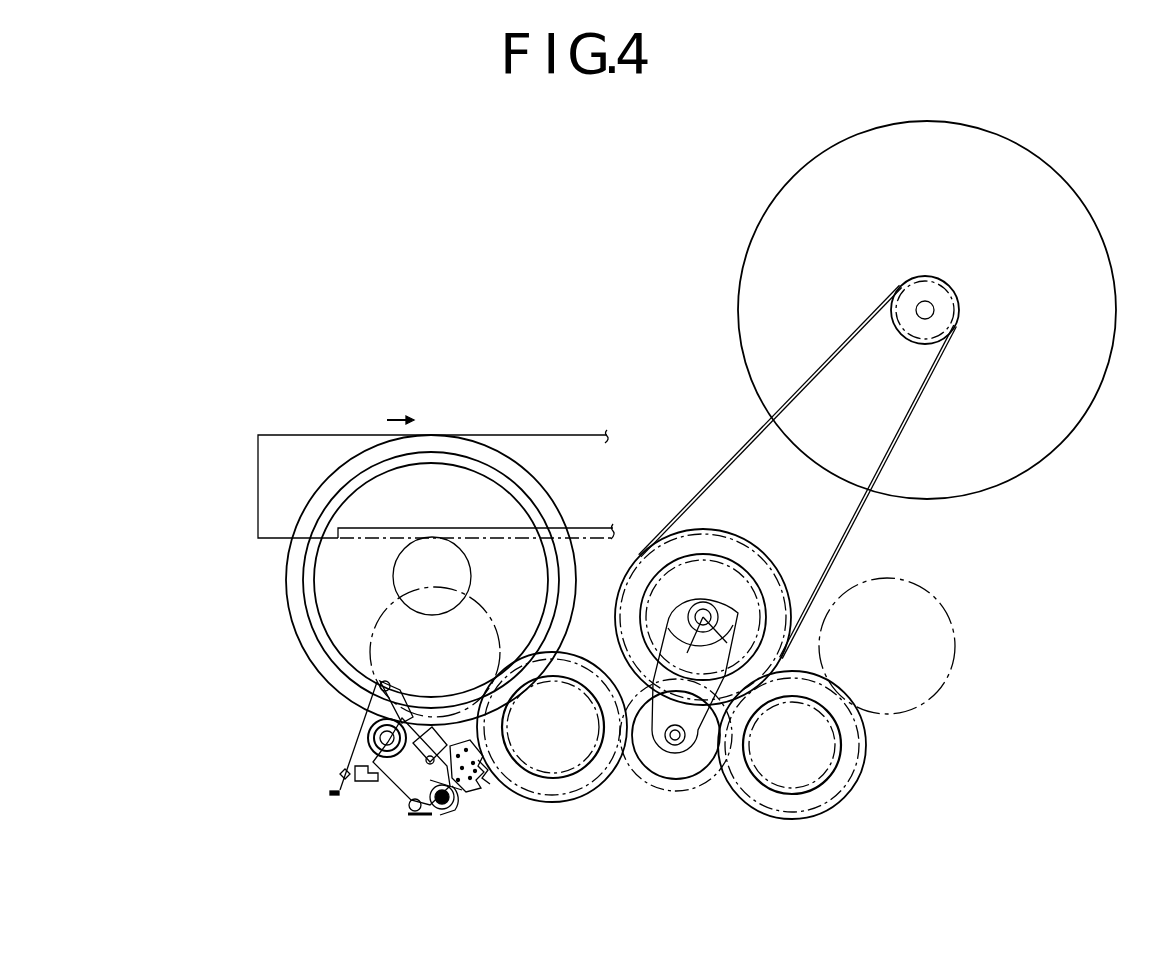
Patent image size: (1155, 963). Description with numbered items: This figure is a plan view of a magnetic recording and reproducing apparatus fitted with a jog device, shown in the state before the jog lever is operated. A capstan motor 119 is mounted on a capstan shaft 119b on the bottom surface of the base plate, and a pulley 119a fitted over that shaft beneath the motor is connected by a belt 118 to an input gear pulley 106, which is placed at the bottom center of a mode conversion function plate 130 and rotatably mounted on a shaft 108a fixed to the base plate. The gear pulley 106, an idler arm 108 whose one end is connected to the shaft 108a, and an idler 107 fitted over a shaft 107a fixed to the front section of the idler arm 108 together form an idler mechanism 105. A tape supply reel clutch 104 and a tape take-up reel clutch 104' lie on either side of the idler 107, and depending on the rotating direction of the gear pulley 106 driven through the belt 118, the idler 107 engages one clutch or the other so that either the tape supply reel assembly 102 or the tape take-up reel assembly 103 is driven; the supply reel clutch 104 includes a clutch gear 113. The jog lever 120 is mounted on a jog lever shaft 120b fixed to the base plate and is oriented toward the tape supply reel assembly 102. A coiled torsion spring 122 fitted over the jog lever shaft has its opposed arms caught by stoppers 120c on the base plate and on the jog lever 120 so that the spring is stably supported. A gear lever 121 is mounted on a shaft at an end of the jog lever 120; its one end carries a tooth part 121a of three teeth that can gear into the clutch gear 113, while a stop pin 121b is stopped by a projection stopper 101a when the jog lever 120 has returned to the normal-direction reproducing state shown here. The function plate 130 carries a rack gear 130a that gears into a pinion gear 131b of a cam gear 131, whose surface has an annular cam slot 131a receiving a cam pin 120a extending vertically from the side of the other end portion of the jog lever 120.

The projection stopper 101a is at (422, 823).
The tape supply reel assembly 102 is at (372, 624).
The tape take-up reel assembly 103 is at (955, 655).
The tape supply reel clutch 104 is at (552, 770).
The tape take-up reel clutch 104' is at (792, 779).
The idler mechanism 105 is at (788, 565).
The input gear pulley 106 is at (707, 547).
The idler 107 is at (664, 795).
The shaft 107a is at (677, 760).
The idler arm 108 is at (663, 625).
The shaft 108a is at (698, 604).
The clutch gear 113 is at (585, 800).
The belt 118 is at (840, 550).
The capstan motor 119 is at (1027, 452).
The pulley 119a is at (945, 313).
The capstan shaft 119b is at (920, 307).
The jog lever 120 is at (397, 772).
The cam pin 120a is at (380, 688).
The jog lever shaft 120b is at (368, 736).
The stopper 120c is at (338, 772).
The gear lever 121 is at (467, 810).
The tooth part 121a is at (480, 790).
The stop pin 121b is at (410, 810).
The coiled torsion spring 122 is at (338, 790).
The mode conversion function plate 130 is at (294, 436).
The rack gear 130a is at (363, 528).
The cam gear 131 is at (377, 452).
The annular cam slot 131a is at (475, 465).
The pinion gear 131b is at (395, 575).